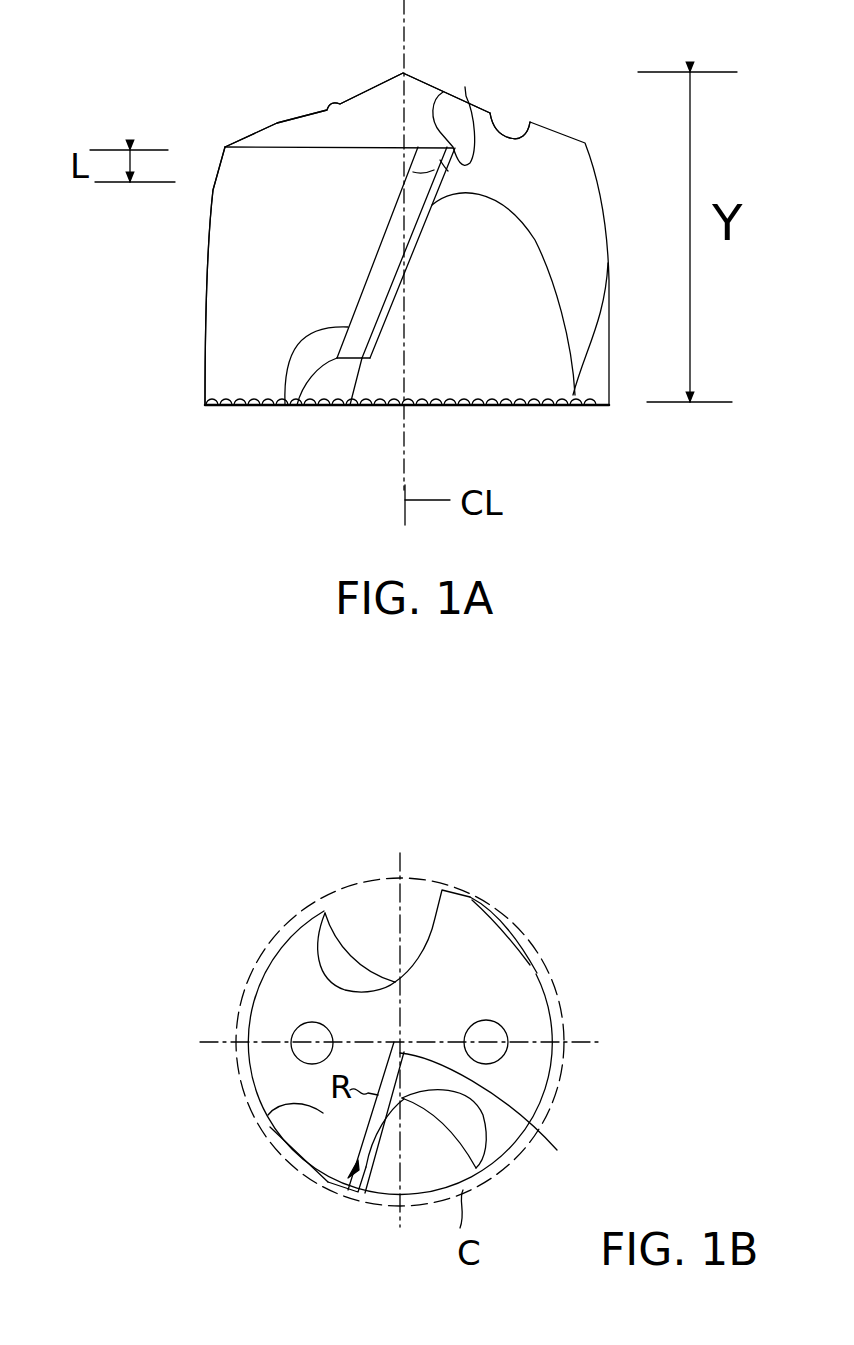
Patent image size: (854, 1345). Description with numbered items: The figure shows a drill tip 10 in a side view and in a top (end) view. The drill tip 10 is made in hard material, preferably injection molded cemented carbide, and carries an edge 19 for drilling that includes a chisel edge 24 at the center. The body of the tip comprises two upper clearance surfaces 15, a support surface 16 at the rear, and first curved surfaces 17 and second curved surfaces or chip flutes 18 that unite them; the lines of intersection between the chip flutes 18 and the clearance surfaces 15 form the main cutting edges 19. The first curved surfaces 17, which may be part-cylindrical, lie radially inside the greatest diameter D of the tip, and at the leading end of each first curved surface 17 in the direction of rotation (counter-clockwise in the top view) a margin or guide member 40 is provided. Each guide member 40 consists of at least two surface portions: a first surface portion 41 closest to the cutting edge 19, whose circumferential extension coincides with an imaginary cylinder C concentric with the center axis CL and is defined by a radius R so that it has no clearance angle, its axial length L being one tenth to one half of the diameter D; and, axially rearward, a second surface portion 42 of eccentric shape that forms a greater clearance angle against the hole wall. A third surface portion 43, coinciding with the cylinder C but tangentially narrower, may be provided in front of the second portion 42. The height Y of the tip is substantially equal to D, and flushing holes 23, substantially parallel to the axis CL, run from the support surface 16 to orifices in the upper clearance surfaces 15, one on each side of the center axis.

In FIG. 1A, the drill tip 10 is at (197, 107).
In FIG. 1B, the drill tip 10 is at (278, 913).
In FIG. 1A, the upper clearance surface 15 is at (375, 108).
In FIG. 1B, the upper clearance surface 15 is at (268, 1115).
In FIG. 1A, the support surface 16 is at (525, 408).
In FIG. 1A, the first curved surface 17 is at (230, 292).
In FIG. 1A, the second curved surface (chip flute) 18 is at (403, 420).
In FIG. 1B, the edge (main cutting edge) 19 is at (435, 918).
In FIG. 1A, the flushing hole 23 is at (511, 130).
In FIG. 1B, the flushing hole 23 is at (297, 1035).
In FIG. 1B, the chisel edge 24 is at (491, 1110).
In FIG. 1A, the guide member (margin) 40 is at (397, 257).
In FIG. 1B, the guide member (margin) 40 is at (473, 889).
In FIG. 1A, the first surface portion 41 is at (465, 87).
In FIG. 1B, the first surface portion 41 is at (449, 890).
In FIG. 1A, the second surface portion 42 is at (285, 410).
In FIG. 1B, the second surface portion 42 is at (486, 912).
In FIG. 1A, the third surface portion 43 is at (390, 292).